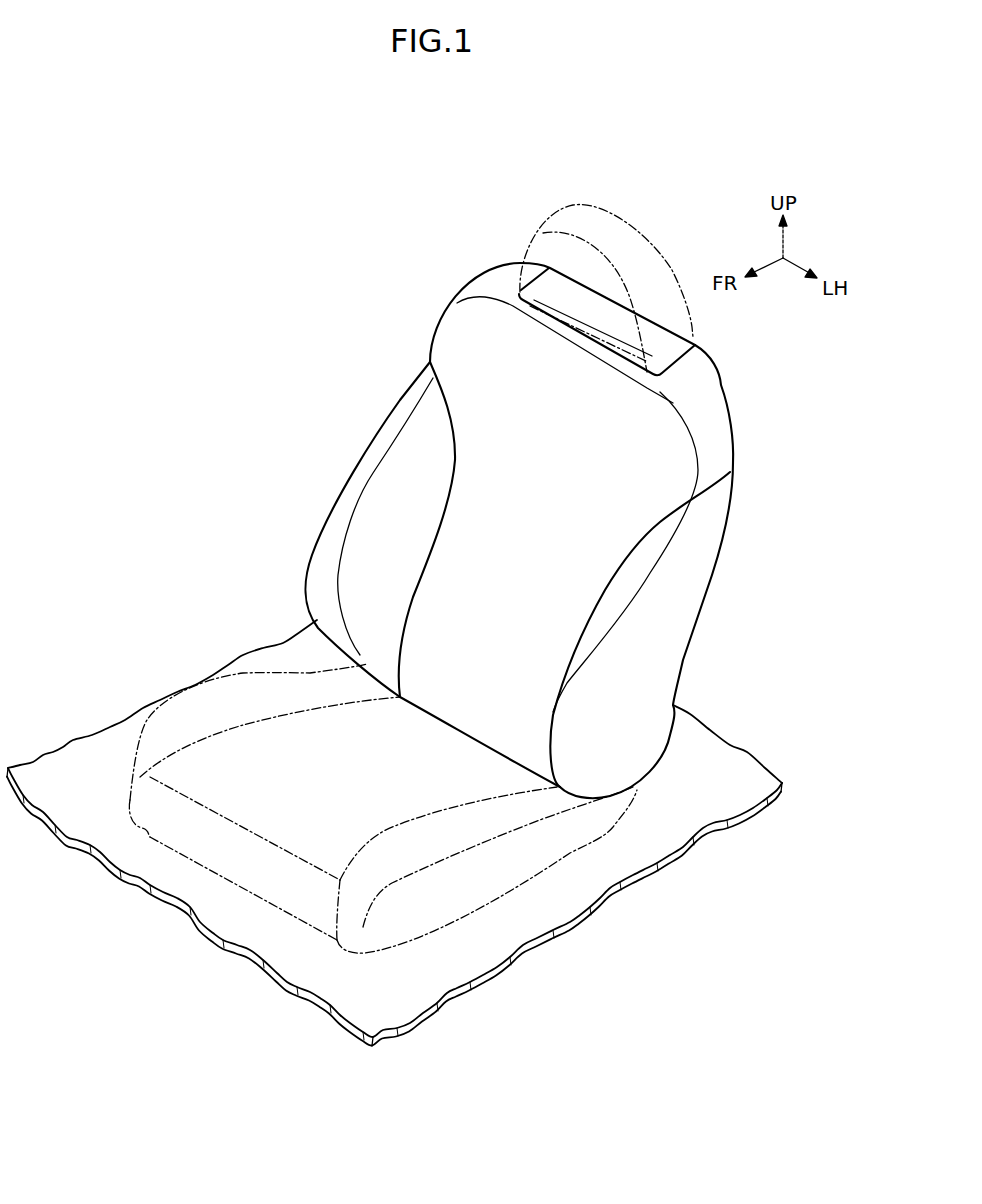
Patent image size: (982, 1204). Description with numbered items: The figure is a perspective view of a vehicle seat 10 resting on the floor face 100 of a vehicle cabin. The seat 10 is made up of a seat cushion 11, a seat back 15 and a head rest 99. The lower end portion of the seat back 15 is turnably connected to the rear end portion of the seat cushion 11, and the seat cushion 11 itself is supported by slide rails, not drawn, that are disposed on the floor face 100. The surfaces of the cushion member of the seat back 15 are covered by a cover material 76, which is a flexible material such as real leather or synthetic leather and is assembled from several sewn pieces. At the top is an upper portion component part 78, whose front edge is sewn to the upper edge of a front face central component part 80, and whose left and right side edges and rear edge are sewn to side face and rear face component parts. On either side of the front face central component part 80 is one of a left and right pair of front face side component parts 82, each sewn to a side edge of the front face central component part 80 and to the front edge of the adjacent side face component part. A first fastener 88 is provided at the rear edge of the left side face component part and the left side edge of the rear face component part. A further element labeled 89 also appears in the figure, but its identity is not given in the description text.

The seat 10 is at (777, 515).
The seat cushion 11 is at (450, 903).
The seat back 15 is at (380, 333).
The cover material 76 is at (393, 467).
The upper portion component part 78 is at (693, 368).
The front face central component part 80 is at (455, 712).
The front face side component part 82 is at (360, 505).
The first fastener 88 is at (730, 497).
The outer side surface 89 is at (705, 558).
The head rest 99 is at (543, 218).
The floor face 100 is at (662, 840).